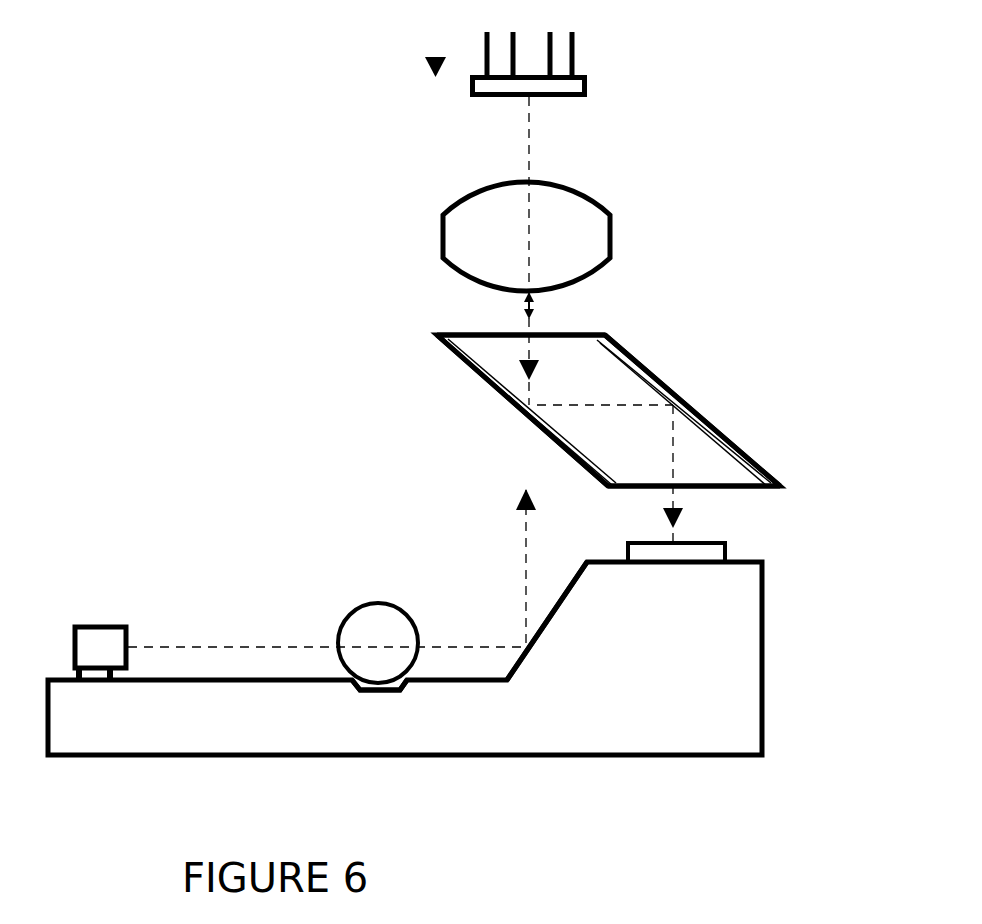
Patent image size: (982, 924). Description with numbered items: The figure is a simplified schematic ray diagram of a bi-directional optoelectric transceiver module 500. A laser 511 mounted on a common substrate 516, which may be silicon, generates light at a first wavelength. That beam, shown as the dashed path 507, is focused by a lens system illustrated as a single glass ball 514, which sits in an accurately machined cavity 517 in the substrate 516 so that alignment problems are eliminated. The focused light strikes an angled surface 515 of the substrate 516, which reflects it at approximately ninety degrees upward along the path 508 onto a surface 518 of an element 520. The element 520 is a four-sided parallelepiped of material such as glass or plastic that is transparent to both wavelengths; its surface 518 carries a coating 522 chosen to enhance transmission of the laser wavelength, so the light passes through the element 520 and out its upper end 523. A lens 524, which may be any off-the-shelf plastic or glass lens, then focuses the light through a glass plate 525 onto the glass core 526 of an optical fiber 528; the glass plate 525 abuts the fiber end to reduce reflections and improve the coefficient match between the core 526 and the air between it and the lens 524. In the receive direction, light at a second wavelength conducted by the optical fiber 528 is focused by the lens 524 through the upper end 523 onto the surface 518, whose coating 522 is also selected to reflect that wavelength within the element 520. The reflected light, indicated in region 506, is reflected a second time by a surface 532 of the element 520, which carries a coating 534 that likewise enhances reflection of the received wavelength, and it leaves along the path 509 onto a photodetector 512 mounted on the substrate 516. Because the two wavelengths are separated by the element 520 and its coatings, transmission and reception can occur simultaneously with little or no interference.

The bi-directional optoelectric transceiver module 500 is at (177, 374).
The reflected beam region 506 is at (619, 401).
The light beam 507 is at (283, 640).
The light beam 508 is at (506, 140).
The beam path to detector 509 is at (678, 440).
The laser 511 is at (93, 633).
The photodetector 512 is at (735, 552).
The glass ball 514 is at (377, 612).
The angled surface 515 is at (548, 633).
The substrate 516 is at (488, 752).
The cavity 517 is at (400, 692).
The surface 518 is at (596, 455).
The element 520 is at (400, 358).
The coating 522 is at (472, 333).
The upper end 523 is at (560, 330).
The lens 524 is at (594, 242).
The glass plate 525 is at (587, 90).
The glass core 526 is at (537, 46).
The optical fiber 528 is at (404, 73).
The surface 532 is at (765, 470).
The coating 534 is at (628, 350).